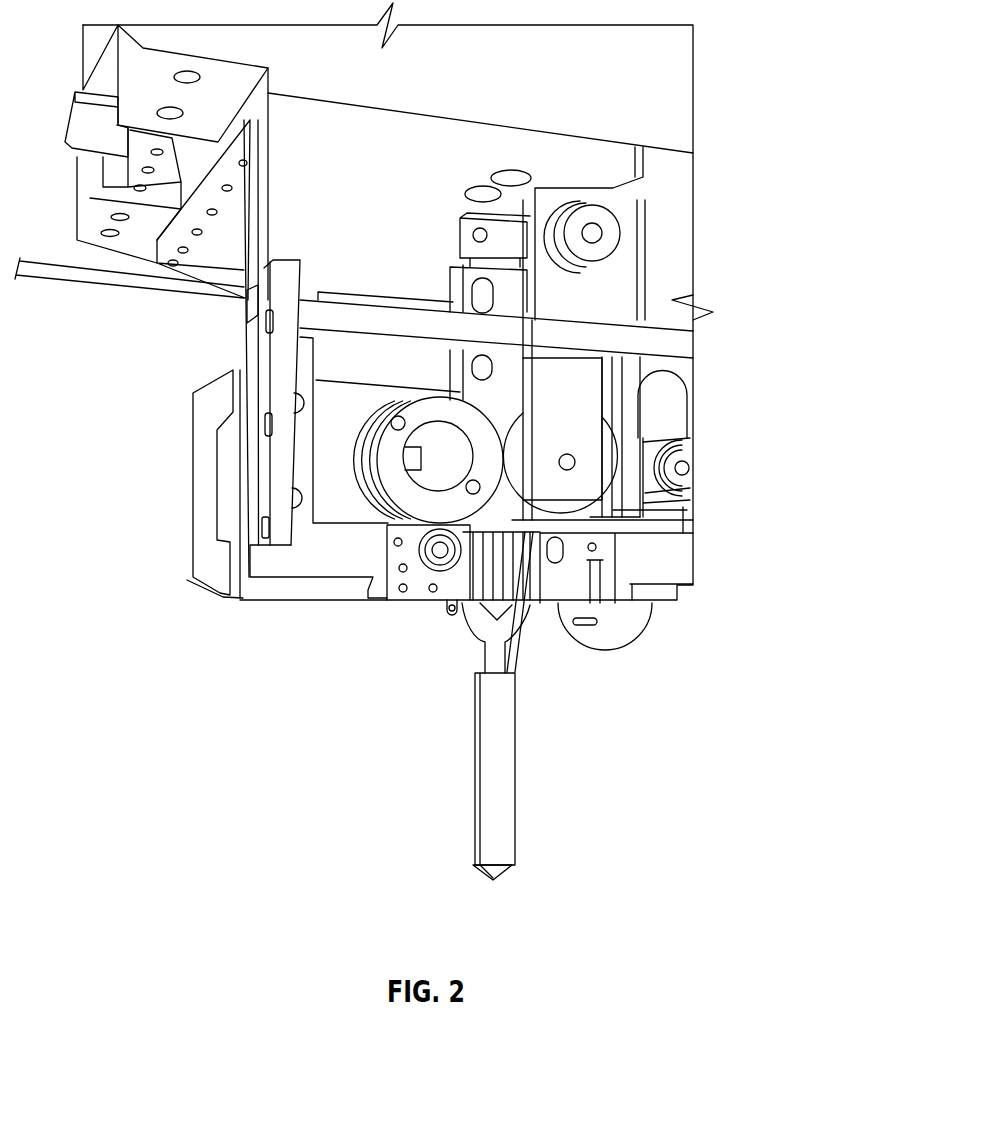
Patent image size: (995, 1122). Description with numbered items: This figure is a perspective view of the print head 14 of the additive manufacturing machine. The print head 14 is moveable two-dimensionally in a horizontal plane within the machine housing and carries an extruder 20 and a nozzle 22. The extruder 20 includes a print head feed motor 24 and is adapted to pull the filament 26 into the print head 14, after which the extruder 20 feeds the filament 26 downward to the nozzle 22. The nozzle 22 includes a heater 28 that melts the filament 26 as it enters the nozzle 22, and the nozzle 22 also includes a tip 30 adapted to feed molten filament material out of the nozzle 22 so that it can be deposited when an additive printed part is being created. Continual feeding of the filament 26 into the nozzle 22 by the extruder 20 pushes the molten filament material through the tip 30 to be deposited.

The print head 14 is at (704, 354).
The extruder 20 is at (576, 380).
The nozzle 22 is at (507, 778).
The print head feed motor 24 is at (443, 468).
The filament 26 is at (480, 415).
The heater 28 is at (560, 605).
The tip 30 is at (497, 873).